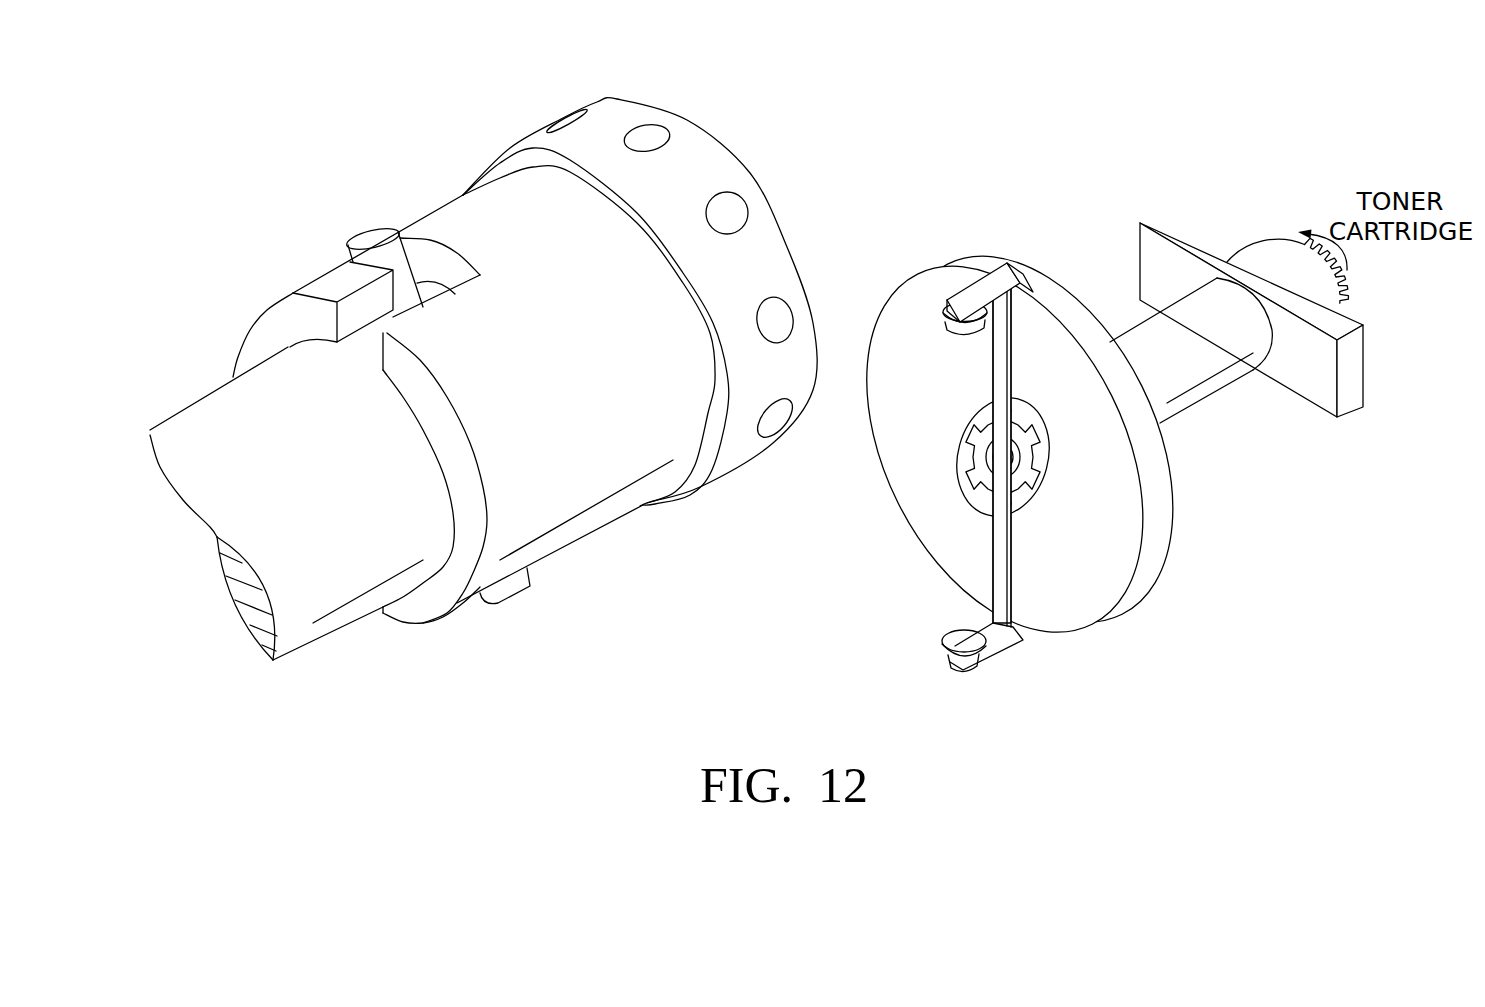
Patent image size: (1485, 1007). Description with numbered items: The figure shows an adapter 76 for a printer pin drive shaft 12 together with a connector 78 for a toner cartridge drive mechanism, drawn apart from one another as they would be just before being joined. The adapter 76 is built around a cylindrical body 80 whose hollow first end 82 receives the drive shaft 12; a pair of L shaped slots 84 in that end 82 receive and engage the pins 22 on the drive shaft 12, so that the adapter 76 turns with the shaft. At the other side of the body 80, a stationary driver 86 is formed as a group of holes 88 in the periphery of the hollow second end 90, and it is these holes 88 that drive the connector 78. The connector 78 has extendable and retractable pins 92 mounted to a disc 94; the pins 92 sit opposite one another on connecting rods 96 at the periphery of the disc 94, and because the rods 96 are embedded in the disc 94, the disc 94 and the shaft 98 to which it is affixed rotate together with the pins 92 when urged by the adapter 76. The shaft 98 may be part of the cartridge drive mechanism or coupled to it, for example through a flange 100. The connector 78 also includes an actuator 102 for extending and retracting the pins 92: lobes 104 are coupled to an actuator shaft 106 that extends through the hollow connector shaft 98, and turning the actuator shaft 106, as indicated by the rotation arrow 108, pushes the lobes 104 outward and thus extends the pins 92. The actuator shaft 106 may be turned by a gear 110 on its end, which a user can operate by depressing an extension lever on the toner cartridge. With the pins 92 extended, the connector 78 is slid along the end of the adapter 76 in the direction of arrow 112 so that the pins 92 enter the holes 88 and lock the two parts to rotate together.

The printer pin drive shaft 12 is at (210, 410).
The pins 22 is at (369, 240).
The adapter 76 is at (266, 250).
The connector 78 is at (1232, 523).
The cylindrical body 80 is at (453, 213).
The hollow first end 82 is at (422, 603).
The L shaped slots 84 is at (443, 273).
The stationary driver 86 is at (650, 137).
The holes 88 is at (672, 275).
The hollow second end 90 is at (773, 257).
The extendable and retractable pins 92 is at (960, 330).
The disc 94 is at (1080, 613).
The connecting rods 96 is at (1002, 375).
The shaft 98 is at (1138, 333).
The flange 100 is at (1163, 222).
The actuator 102 is at (973, 490).
The lobes 104 is at (978, 442).
The actuator shaft 106 is at (993, 468).
The rotation arrow 108 is at (1343, 265).
The gear 110 is at (1337, 287).
The arrow 112 is at (830, 431).